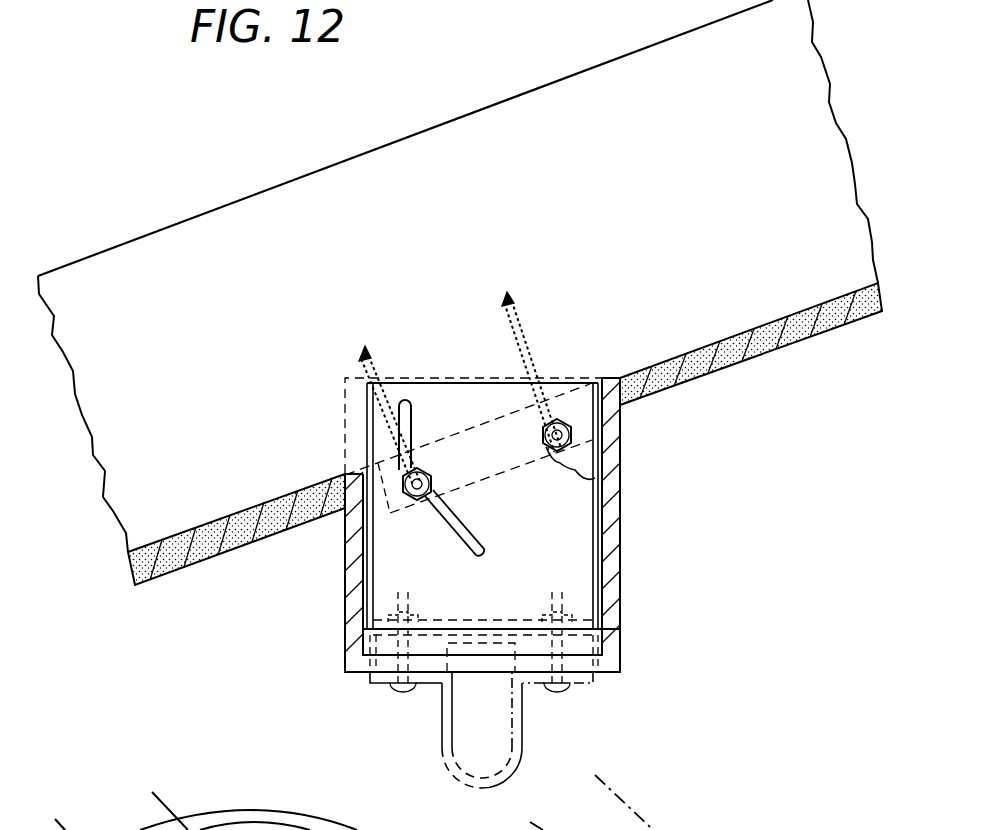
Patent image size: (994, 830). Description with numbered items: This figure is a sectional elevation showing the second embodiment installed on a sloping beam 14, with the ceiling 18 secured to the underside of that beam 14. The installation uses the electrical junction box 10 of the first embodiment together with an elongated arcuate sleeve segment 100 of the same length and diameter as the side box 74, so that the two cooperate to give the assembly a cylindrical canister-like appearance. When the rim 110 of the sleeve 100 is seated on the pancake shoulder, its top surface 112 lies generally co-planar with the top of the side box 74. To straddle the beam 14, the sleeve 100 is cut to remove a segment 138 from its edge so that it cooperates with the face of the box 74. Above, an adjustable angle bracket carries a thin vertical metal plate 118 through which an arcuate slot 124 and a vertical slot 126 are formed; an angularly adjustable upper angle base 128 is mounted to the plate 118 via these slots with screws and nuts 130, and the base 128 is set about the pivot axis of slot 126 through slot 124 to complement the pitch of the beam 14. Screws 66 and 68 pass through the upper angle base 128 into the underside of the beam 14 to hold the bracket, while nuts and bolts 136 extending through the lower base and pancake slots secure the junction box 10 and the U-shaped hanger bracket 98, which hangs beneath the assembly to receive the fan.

The electrical junction box 10 is at (616, 682).
The joist or center beam 14 is at (806, 98).
The ceiling 18 is at (747, 360).
The screw 66 is at (372, 366).
The screw 68 is at (548, 368).
The side box 74 is at (626, 570).
The U-shaped hanger bracket 98 is at (518, 758).
The arcuate sleeve segment 100 is at (325, 601).
The rim 110 is at (620, 632).
The top surface 112 is at (610, 380).
The vertical metal plate 118 is at (546, 582).
The arcuate slot 124 is at (452, 538).
The vertical slot 126 is at (620, 470).
The upper angle base 128 is at (450, 434).
The screws and nuts 130 is at (545, 446).
The nuts and bolts 136 is at (398, 690).
The cutaway segment 138 is at (345, 426).